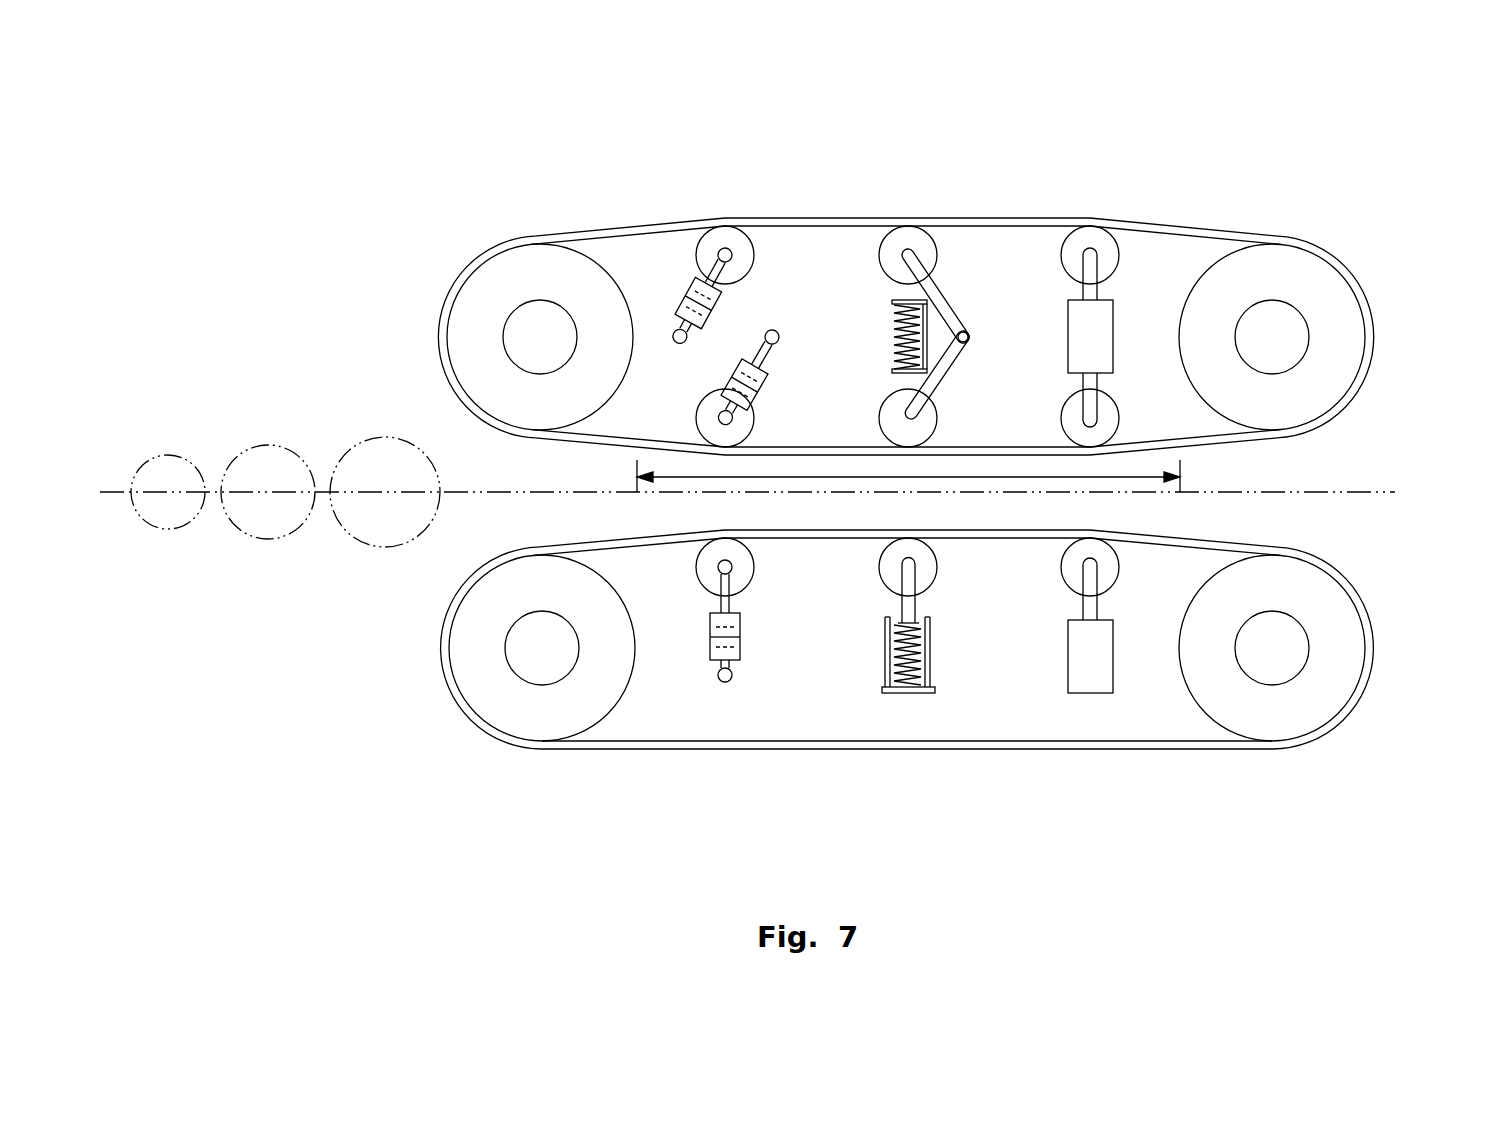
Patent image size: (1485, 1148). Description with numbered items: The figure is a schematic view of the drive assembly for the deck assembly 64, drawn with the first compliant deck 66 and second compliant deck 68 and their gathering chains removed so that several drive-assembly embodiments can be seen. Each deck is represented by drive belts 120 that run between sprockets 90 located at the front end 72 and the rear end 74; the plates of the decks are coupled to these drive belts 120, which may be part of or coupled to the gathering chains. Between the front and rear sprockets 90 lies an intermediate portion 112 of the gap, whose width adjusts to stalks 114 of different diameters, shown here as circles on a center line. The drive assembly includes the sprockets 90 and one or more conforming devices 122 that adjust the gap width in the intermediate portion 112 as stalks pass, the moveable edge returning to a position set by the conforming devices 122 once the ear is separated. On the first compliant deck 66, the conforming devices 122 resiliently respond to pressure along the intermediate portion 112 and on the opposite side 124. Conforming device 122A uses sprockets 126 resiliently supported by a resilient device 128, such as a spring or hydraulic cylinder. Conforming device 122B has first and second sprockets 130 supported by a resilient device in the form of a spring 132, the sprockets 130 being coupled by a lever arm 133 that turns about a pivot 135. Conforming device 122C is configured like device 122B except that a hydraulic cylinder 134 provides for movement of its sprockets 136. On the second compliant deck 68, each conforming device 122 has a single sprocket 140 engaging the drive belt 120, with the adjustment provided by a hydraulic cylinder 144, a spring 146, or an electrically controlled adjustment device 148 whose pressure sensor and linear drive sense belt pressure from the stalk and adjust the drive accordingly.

The deck assembly 64 is at (230, 222).
The first compliant deck 66 is at (556, 143).
The second compliant deck 68 is at (631, 822).
The front end 72 is at (446, 548).
The rear end 74 is at (1366, 528).
The sprockets 90 is at (485, 298).
The intermediate portion 112 is at (705, 483).
The stalks 114 is at (252, 596).
The drive belts 120 is at (1188, 203).
The conforming devices 122 is at (743, 647).
The conforming device 122A is at (675, 237).
The conforming device 122B is at (943, 212).
The conforming device 122C is at (1136, 242).
The side opposite the intermediate portion 124 is at (833, 190).
The sprockets 126 is at (727, 236).
The resilient device 128 is at (752, 335).
The first and second sprockets 130 is at (905, 230).
The resilient device (spring) 132 is at (892, 343).
The lever arm 133 is at (932, 290).
The hydraulic cylinder 134 is at (1115, 312).
The pivot 135 is at (968, 332).
The sprockets 136 is at (1083, 232).
The single sprocket 140 is at (883, 570).
The hydraulic cylinder 144 is at (703, 647).
The spring 146 is at (892, 662).
The electrically controlled adjustment device 148 is at (1078, 652).